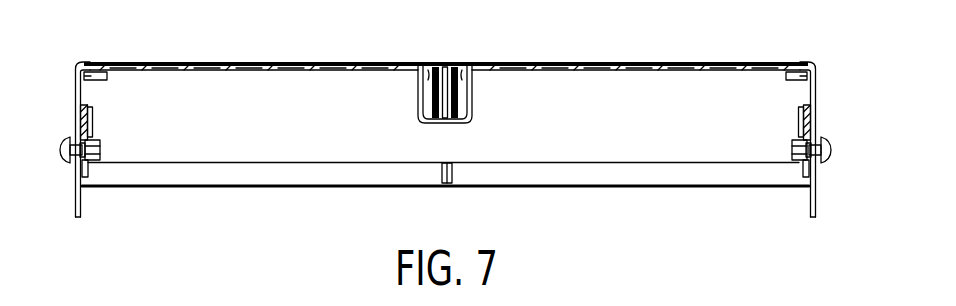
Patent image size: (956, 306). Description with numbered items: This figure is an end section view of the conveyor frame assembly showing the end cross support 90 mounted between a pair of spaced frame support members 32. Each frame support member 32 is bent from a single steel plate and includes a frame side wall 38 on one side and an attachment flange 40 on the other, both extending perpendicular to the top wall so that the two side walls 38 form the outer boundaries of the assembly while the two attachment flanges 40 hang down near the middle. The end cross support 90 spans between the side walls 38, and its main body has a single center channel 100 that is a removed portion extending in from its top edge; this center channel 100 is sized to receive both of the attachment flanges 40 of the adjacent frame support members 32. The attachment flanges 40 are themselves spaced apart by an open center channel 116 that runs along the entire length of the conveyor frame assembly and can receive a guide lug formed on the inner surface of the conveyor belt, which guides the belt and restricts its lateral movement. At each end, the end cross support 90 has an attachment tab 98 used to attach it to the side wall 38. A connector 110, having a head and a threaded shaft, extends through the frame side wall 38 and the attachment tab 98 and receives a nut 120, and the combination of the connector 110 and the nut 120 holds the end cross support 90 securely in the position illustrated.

The frame support member 32 is at (203, 125).
The frame side wall 38 is at (77, 89).
The attachment flange 40 is at (422, 95).
The end cross support 90 is at (613, 88).
The attachment tab 98 is at (80, 115).
The center channel 100 is at (468, 100).
The connector 110 is at (59, 152).
The center channel 116 is at (461, 62).
The nut 120 is at (97, 140).